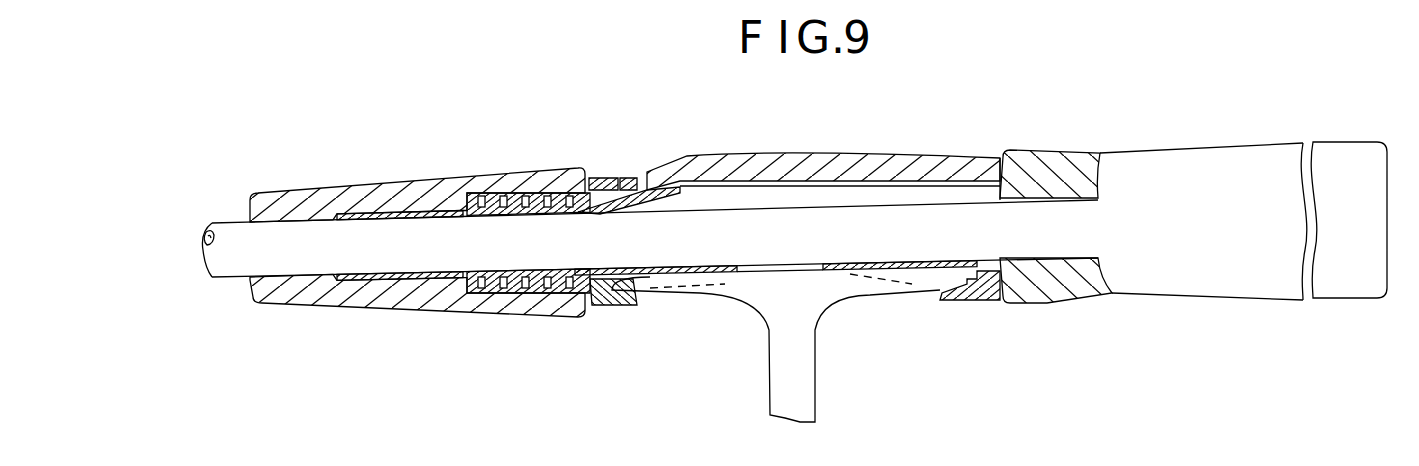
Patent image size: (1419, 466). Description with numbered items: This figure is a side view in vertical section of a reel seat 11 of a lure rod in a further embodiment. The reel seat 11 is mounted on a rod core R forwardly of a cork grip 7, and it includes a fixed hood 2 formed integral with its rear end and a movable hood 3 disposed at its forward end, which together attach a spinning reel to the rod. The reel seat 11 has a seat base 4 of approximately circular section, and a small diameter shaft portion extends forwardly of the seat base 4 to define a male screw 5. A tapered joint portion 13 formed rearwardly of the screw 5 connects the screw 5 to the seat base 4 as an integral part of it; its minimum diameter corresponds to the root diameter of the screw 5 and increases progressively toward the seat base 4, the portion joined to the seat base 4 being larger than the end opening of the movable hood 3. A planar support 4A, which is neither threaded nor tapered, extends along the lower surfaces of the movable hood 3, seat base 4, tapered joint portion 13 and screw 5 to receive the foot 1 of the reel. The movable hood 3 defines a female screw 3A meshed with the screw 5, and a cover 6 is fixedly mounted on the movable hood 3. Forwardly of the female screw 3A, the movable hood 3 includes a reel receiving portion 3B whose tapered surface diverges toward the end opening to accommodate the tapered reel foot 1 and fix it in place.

The rod core R is at (229, 225).
The foot 1 is at (750, 292).
The fixed hood 2 is at (967, 302).
The movable hood 3 is at (602, 178).
The female screw 3A is at (505, 294).
The reel receiving portion 3B is at (650, 290).
The seat base 4 is at (820, 155).
The planar support 4A is at (690, 278).
The male screw 5 is at (543, 205).
The cover 6 is at (435, 170).
The cork grip 7 is at (1230, 280).
The reel seat 11 is at (843, 273).
The tapered joint portion 13 is at (618, 178).